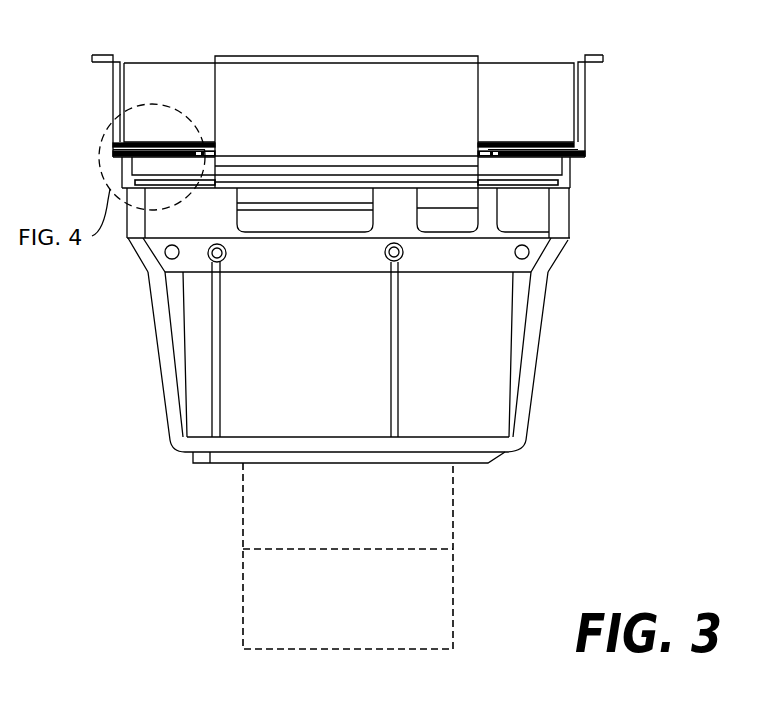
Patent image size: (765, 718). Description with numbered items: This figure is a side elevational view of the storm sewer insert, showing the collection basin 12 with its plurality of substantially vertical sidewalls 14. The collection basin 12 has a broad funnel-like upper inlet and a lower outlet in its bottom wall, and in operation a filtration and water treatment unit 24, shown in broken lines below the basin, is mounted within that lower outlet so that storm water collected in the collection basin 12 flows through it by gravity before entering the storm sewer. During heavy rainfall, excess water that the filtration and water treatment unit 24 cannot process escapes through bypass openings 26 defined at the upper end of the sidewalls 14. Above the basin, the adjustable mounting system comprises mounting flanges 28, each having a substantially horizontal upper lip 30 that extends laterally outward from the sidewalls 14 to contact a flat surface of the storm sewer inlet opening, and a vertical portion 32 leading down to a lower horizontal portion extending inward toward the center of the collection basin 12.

The collection basin 12 is at (140, 408).
The substantially vertical sidewalls 14 is at (321, 372).
The filtration and water treatment unit 24 is at (474, 548).
The bypass openings 26 is at (258, 220).
The mounting flanges 28 is at (598, 99).
The horizontal upper lip 30 is at (597, 55).
The vertical portion 32 is at (587, 123).